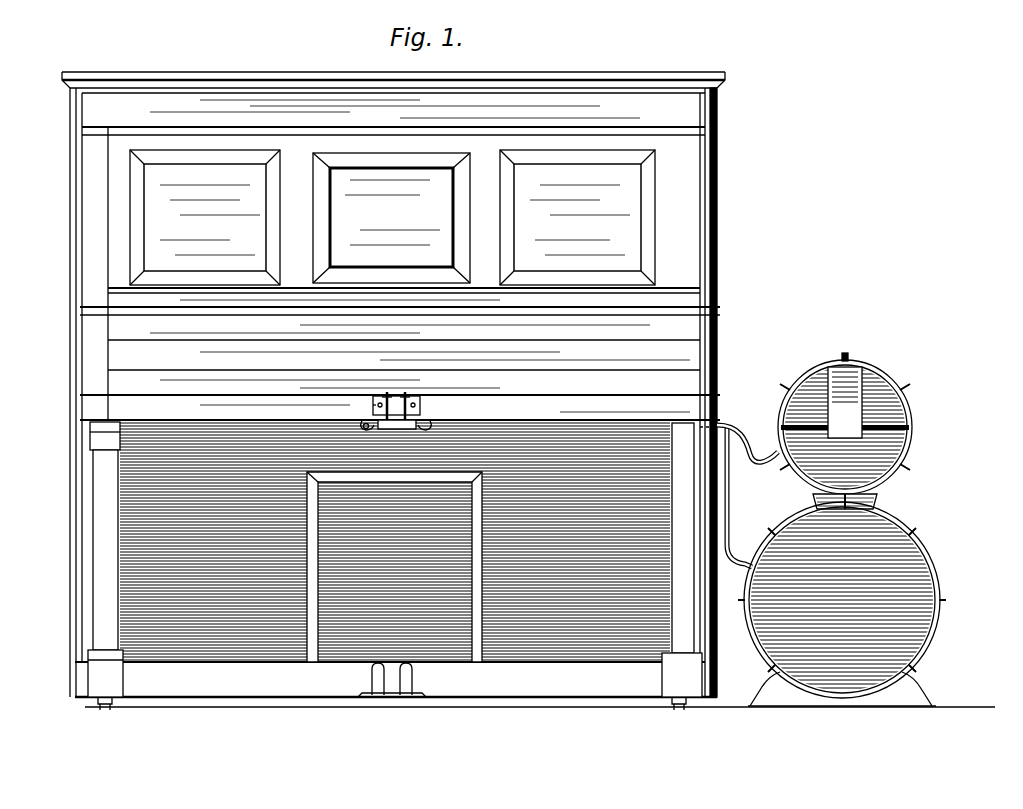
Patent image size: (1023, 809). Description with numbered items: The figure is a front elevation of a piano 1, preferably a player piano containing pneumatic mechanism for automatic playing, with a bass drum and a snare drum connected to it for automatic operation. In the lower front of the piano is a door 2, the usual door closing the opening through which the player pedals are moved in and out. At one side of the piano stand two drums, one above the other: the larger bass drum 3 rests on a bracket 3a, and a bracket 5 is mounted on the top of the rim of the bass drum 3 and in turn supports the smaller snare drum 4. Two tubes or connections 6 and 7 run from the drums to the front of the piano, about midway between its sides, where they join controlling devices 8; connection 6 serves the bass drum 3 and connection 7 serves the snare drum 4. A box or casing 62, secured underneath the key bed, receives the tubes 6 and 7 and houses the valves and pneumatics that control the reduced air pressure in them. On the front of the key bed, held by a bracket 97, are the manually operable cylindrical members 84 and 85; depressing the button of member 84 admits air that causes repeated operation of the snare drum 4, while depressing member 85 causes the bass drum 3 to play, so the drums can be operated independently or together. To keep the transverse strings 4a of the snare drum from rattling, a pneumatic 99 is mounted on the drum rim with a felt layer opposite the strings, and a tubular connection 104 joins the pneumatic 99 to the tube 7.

The piano 1 is at (718, 229).
The door 2 is at (478, 580).
The bass drum 3 is at (928, 574).
The bracket 3a is at (916, 676).
The snare drum 4 is at (904, 447).
The transverse strings 4a is at (880, 424).
The bracket 5 is at (878, 497).
The connection 6 is at (731, 530).
The connection 7 is at (741, 429).
The controlling devices 8 is at (418, 404).
The cylindrical member 84 is at (384, 400).
The cylindrical member 85 is at (405, 398).
The bracket 97 is at (372, 405).
The box or casing 62 is at (368, 430).
The pneumatic 99 is at (850, 428).
The tubular connection 104 is at (848, 357).